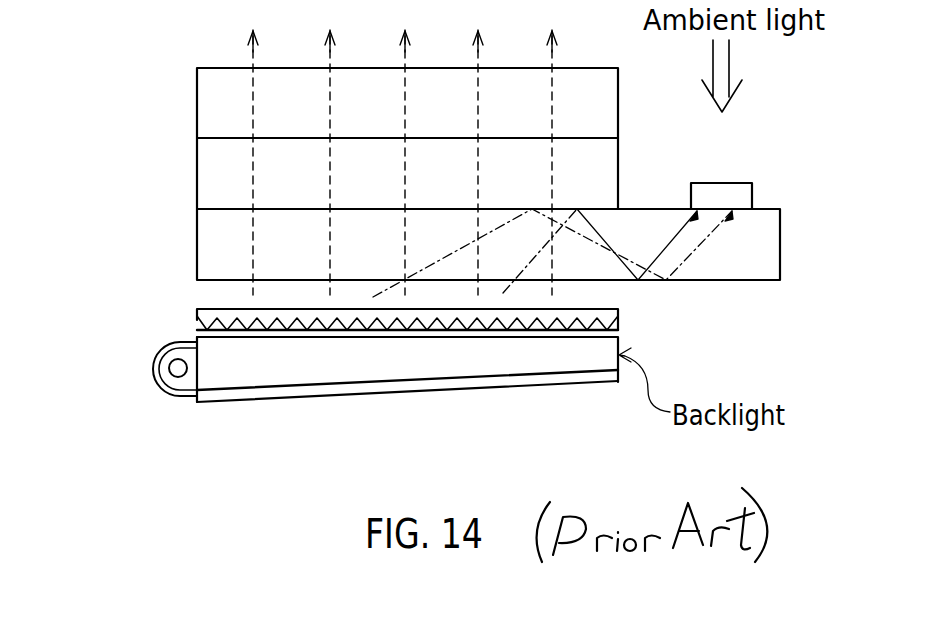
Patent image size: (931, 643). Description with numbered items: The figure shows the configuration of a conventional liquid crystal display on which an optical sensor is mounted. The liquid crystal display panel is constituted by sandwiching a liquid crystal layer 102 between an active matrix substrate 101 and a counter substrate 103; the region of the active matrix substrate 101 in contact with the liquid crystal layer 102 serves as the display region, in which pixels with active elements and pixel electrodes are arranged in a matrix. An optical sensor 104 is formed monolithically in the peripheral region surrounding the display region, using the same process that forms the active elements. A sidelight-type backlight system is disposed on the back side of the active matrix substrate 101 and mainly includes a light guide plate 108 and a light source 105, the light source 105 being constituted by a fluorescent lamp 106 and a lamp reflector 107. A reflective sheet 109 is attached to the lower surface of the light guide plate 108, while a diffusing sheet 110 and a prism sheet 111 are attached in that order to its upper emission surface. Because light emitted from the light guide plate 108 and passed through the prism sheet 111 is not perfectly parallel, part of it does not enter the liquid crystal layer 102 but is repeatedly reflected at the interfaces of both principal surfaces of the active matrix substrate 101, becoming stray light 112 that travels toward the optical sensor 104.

The active matrix substrate 101 is at (197, 240).
The liquid crystal layer 102 is at (197, 176).
The counter substrate 103 is at (197, 106).
The optical sensor 104 is at (732, 183).
The light source 105 is at (112, 370).
The fluorescent lamp 106 is at (174, 369).
The lamp reflector 107 is at (156, 367).
The light guide plate 108 is at (363, 368).
The reflective sheet 109 is at (293, 392).
The diffusing sheet 110 is at (197, 337).
The prism sheet 111 is at (197, 312).
The stray light 112 is at (685, 238).